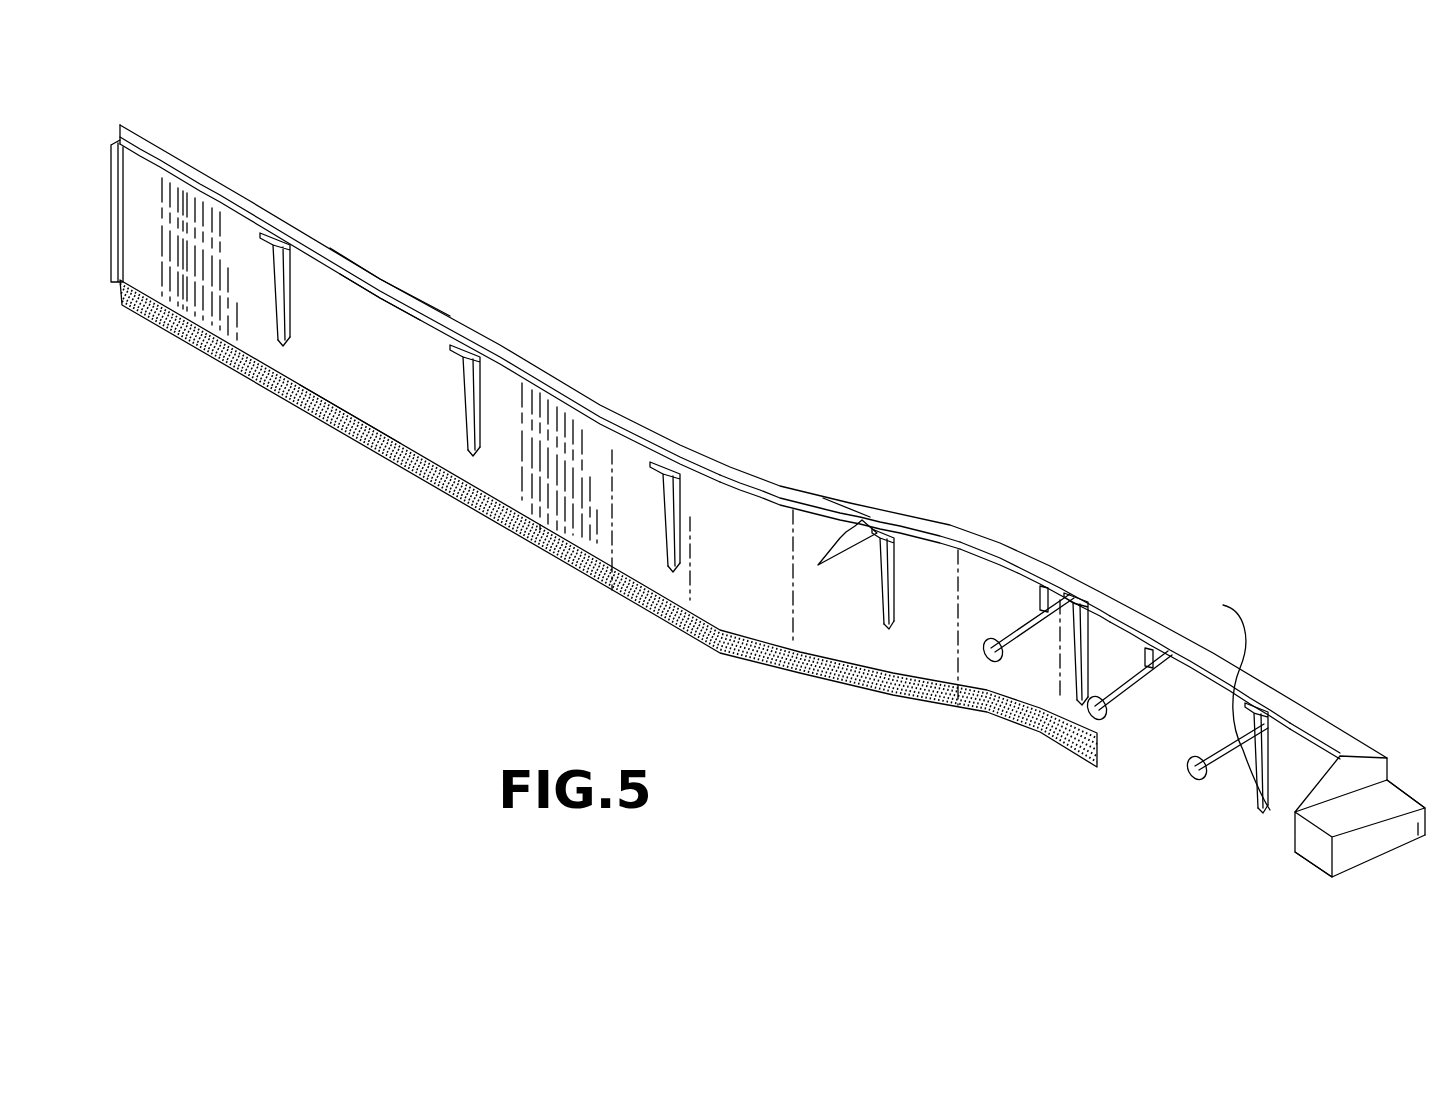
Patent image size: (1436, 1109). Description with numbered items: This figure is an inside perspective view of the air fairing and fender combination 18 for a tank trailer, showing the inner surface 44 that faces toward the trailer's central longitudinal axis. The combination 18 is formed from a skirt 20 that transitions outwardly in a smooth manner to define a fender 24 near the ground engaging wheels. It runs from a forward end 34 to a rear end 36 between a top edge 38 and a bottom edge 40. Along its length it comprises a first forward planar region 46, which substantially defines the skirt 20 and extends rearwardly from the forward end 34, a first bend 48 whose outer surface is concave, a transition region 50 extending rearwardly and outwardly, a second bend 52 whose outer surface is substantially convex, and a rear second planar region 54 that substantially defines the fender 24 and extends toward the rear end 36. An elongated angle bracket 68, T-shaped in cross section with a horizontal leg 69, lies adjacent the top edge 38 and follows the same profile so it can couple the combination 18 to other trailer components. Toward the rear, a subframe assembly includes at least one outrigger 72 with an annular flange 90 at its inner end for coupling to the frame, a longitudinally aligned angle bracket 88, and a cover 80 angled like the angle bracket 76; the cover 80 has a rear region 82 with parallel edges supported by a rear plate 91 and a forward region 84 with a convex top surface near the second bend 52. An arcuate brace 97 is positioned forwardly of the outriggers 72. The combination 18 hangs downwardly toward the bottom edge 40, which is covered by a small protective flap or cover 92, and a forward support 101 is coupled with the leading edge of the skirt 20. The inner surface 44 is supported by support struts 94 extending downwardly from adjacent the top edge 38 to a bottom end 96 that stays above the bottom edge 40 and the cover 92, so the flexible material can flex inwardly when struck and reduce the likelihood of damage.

The air fairing and fender combination 18 is at (943, 358).
The skirt 20 is at (447, 420).
The fender 24 is at (1297, 766).
The forward end 34 is at (140, 116).
The rear end 36 is at (1418, 790).
The top edge 38 is at (360, 253).
The bottom edge 40 is at (303, 420).
The inner surface 44 is at (422, 385).
The first forward planar region 46 is at (636, 538).
The first bend 48 is at (755, 605).
The transition region 50 is at (912, 640).
The second bend 52 is at (1005, 680).
The rear second planar region 54 is at (1086, 736).
The elongated angle bracket 68 is at (393, 283).
The leg 69 is at (403, 317).
The outrigger 72 is at (1019, 632).
The angle bracket 76 is at (1040, 600).
The cover 80 is at (1331, 725).
The rear region 82 is at (1253, 683).
The forward region 84 is at (1003, 537).
The longitudinally aligned angle bracket 88 is at (785, 485).
The annular flange 90 is at (990, 639).
The rear plate 91 is at (1313, 866).
The protective flap or cover 92 is at (348, 427).
The support struts 94 is at (295, 283).
The bottom end 96 is at (285, 347).
The arcuate brace 97 is at (830, 543).
The forward support 101 is at (112, 212).